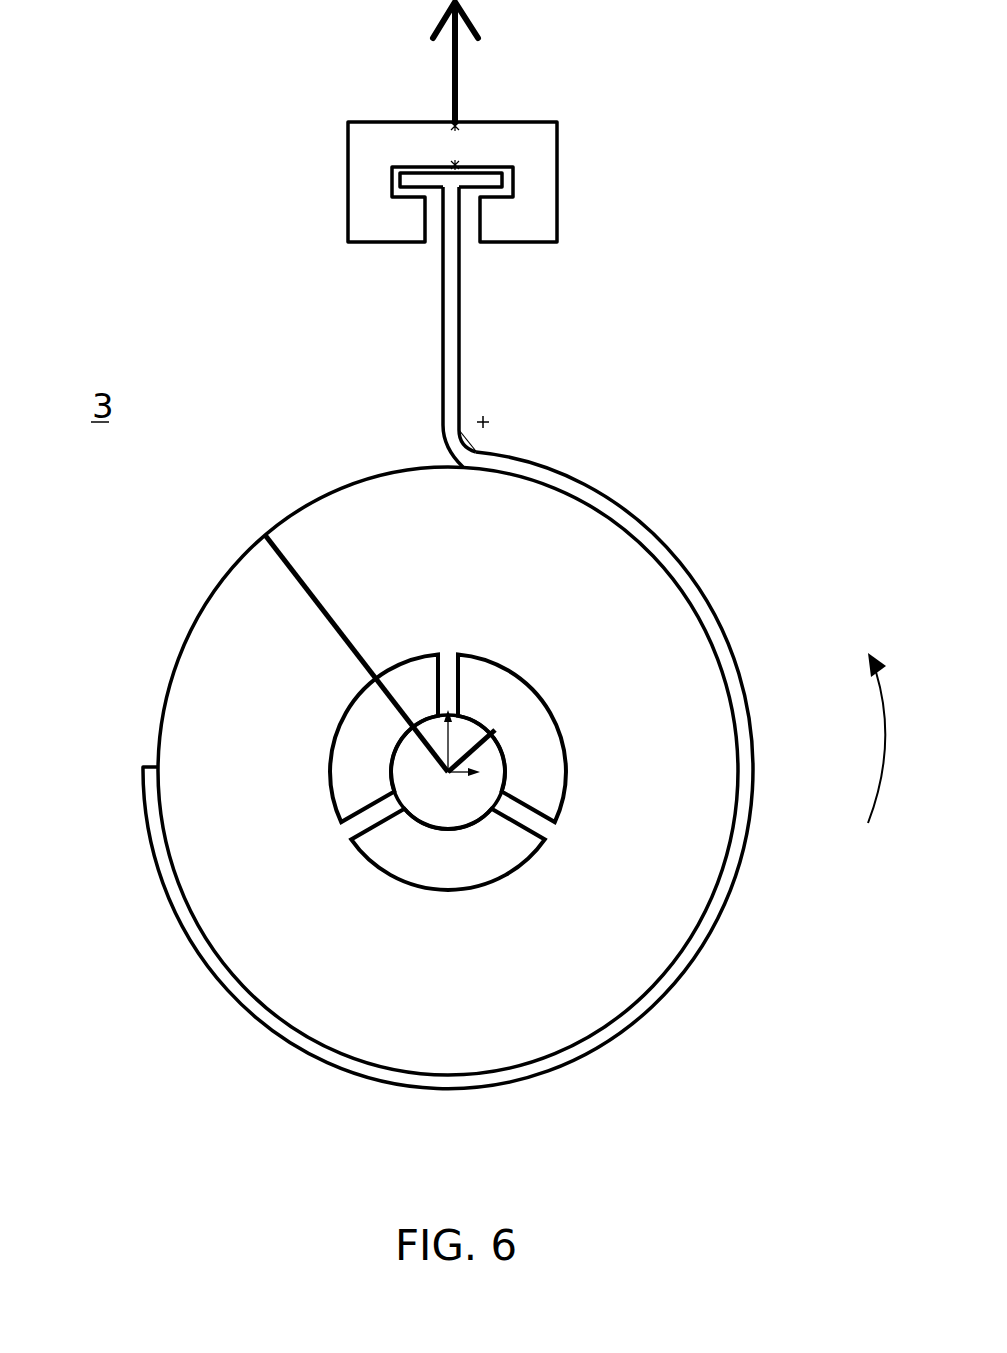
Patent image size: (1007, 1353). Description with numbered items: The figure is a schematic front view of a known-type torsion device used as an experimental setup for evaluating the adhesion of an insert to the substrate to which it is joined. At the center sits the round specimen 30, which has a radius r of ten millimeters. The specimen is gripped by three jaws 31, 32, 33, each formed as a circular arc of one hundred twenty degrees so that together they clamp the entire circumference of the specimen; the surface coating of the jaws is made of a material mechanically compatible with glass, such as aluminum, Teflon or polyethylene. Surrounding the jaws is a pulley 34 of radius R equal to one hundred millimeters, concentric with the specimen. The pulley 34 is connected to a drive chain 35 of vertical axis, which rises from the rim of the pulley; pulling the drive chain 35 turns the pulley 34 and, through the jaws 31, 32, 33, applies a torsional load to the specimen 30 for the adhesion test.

The round specimen 30 is at (450, 808).
The jaw 31 is at (360, 743).
The jaw 32 is at (542, 745).
The jaw 33 is at (435, 857).
The pulley 34 is at (180, 647).
The drive chain 35 is at (455, 297).